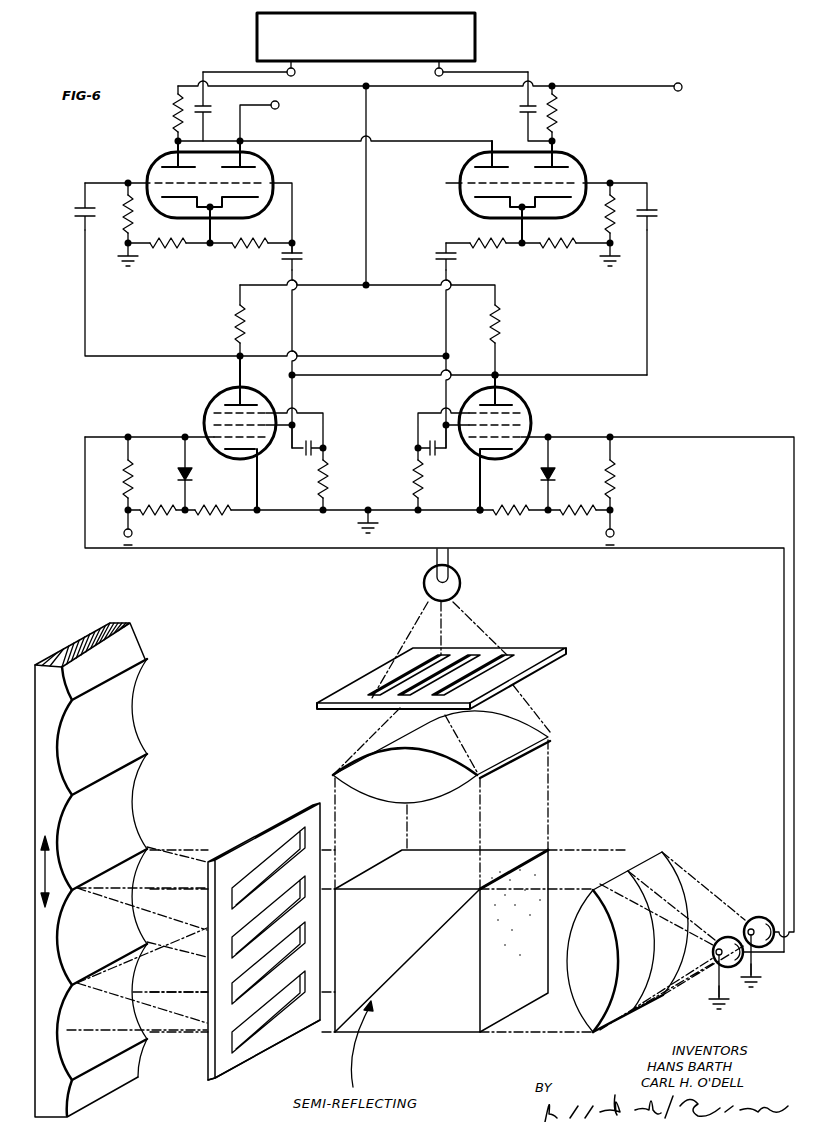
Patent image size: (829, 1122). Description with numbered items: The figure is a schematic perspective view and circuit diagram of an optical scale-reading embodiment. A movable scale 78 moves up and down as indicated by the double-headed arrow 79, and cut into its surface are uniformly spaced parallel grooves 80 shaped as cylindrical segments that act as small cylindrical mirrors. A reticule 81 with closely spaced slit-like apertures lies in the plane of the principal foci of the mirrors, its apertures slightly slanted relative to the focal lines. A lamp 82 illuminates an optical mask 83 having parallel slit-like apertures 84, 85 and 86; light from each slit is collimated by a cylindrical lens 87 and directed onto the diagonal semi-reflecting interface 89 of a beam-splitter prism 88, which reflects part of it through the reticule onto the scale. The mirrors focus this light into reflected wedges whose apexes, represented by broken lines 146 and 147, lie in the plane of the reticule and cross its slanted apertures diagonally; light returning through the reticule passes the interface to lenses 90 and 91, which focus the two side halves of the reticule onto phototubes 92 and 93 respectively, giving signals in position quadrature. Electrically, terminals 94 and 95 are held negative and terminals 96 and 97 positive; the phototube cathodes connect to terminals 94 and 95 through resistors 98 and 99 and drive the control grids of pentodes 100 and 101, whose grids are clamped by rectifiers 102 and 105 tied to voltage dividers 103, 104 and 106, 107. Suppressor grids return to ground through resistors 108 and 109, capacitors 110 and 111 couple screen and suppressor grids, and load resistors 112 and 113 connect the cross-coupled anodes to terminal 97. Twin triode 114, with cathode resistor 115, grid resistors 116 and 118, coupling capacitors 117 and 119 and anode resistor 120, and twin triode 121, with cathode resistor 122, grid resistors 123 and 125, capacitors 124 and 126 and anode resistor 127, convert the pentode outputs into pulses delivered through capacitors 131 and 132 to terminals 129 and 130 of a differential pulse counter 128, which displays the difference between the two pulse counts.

The movable scale 78 is at (102, 867).
The double-headed arrow 79 is at (42, 864).
The grooves 80 is at (124, 728).
The reticule 81 is at (250, 955).
The lamp 82 is at (460, 590).
The optical mask 83 is at (447, 666).
The slit-like aperture 84 is at (393, 682).
The slit-like aperture 85 is at (468, 656).
The slit-like aperture 86 is at (506, 652).
The cylindrical lens 87 is at (495, 770).
The beam-splitter prism 88 is at (441, 955).
The semi-reflecting interface 89 is at (398, 965).
The lens 90 is at (627, 927).
The lens 91 is at (643, 862).
The phototube 92 is at (733, 936).
The phototube 93 is at (770, 921).
The terminal 94 is at (124, 534).
The terminal 95 is at (606, 534).
The terminal 96 is at (279, 105).
The terminal 97 is at (680, 83).
The resistor 98 is at (135, 466).
The resistor 99 is at (614, 484).
The pentode vacuum tube 100 is at (220, 400).
The pentode vacuum tube 101 is at (523, 399).
The diode rectifier 102 is at (194, 474).
The voltage divider resistor 103 is at (172, 500).
The voltage divider resistor 104 is at (203, 515).
The rectifier 105 is at (555, 478).
The voltage divider resistor 106 is at (531, 504).
The voltage divider resistor 107 is at (599, 504).
The resistor 108 is at (320, 492).
The resistor 109 is at (414, 485).
The capacitor 110 is at (306, 458).
The capacitor 111 is at (440, 460).
The load resistor 112 is at (234, 321).
The load resistor 113 is at (503, 324).
The twin triode vacuum tube 114 is at (273, 168).
The resistor 115 is at (166, 246).
The resistor 116 is at (122, 224).
The capacitor 117 is at (78, 210).
The resistor 118 is at (253, 250).
The capacitor 119 is at (304, 248).
The resistor 120 is at (173, 113).
The twin triode vacuum tube 121 is at (459, 160).
The resistor 122 is at (545, 251).
The resistor 123 is at (498, 250).
The capacitor 124 is at (434, 253).
The resistor 125 is at (606, 225).
The capacitor 126 is at (649, 210).
The resistor 127 is at (557, 110).
The differential pulse counter 128 is at (475, 45).
The terminal 129 is at (295, 72).
The terminal 130 is at (435, 72).
The capacitor 131 is at (212, 109).
The capacitor 132 is at (517, 117).
The broken line 146 is at (226, 967).
The broken line 147 is at (216, 1066).